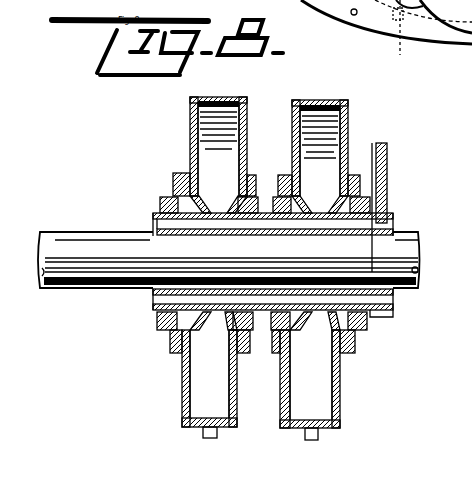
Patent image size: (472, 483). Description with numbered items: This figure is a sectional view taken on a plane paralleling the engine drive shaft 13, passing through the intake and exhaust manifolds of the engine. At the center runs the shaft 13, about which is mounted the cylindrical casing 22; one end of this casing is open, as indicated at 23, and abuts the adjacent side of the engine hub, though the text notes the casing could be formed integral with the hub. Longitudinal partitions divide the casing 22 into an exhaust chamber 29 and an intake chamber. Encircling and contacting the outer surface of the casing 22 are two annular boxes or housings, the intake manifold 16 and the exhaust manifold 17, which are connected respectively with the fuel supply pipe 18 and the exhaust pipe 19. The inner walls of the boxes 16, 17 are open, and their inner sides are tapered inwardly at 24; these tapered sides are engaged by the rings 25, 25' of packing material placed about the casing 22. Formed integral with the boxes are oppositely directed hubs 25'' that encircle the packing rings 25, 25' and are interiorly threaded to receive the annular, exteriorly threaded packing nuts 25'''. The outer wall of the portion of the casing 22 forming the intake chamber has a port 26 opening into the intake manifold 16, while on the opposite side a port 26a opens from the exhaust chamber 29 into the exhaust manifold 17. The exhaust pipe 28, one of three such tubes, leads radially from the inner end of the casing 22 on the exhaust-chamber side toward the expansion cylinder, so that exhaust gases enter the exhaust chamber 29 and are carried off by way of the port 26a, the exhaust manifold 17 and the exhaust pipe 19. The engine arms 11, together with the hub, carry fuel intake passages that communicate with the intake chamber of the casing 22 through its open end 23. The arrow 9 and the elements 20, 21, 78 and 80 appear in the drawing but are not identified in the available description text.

The section direction arrows 9 is at (374, 165).
The arms 11 is at (346, 37).
The shaft 13 is at (72, 240).
The intake manifold 16 is at (217, 100).
The exhaust manifold 17 is at (348, 133).
The fuel supply pipe 18 is at (203, 433).
The exhaust pipe 19 is at (318, 435).
The lower spring cup 20 is at (182, 408).
The lower spring cup 21 is at (341, 400).
The cylindrical casing 22 is at (393, 222).
The open end 23 is at (395, 312).
The tapered inner sides 24 is at (356, 342).
The packing ring 25 is at (143, 344).
The packing ring 25' is at (398, 189).
The hubs 25'' is at (259, 273).
The packing nuts 25''' is at (249, 212).
The port 26 is at (214, 212).
The port 26a is at (313, 318).
The exhaust pipe 28 is at (388, 157).
The exhaust chamber 29 is at (295, 232).
The wheel ring 78 is at (471, 25).
The wheel hub 80 is at (355, 14).